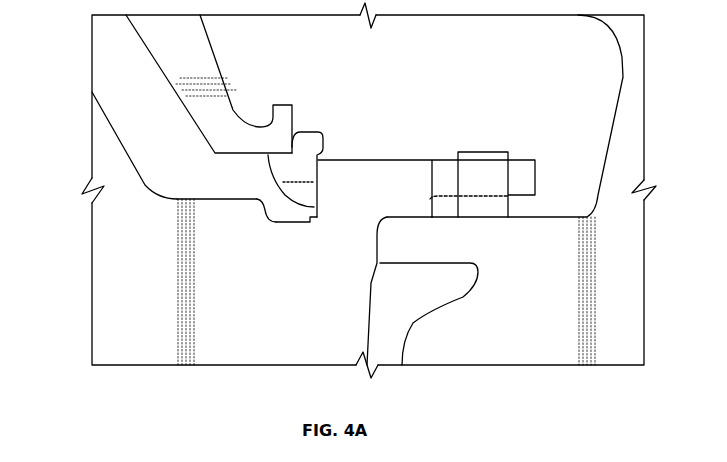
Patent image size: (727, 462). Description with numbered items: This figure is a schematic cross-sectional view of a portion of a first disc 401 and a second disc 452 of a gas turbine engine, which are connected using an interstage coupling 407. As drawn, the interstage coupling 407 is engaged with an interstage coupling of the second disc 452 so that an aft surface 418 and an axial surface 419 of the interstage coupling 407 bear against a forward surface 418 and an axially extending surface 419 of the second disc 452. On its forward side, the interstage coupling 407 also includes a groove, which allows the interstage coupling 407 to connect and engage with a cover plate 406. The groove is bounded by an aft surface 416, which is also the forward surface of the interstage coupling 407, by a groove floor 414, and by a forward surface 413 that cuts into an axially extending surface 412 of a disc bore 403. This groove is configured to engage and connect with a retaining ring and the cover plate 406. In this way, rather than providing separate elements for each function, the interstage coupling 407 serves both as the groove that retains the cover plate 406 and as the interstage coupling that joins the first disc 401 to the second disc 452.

The first disc 401 is at (105, 152).
The disc bore 403 is at (206, 282).
The cover plate 406 is at (200, 52).
The interstage coupling 407 is at (522, 184).
The axially extending surface 412 is at (176, 200).
The forward surface 413 is at (257, 204).
The groove floor 414 is at (287, 224).
The aft surface 416 is at (282, 182).
The aft surface 418 is at (376, 236).
The axial surface 419 is at (412, 212).
The second disc 452 is at (470, 190).